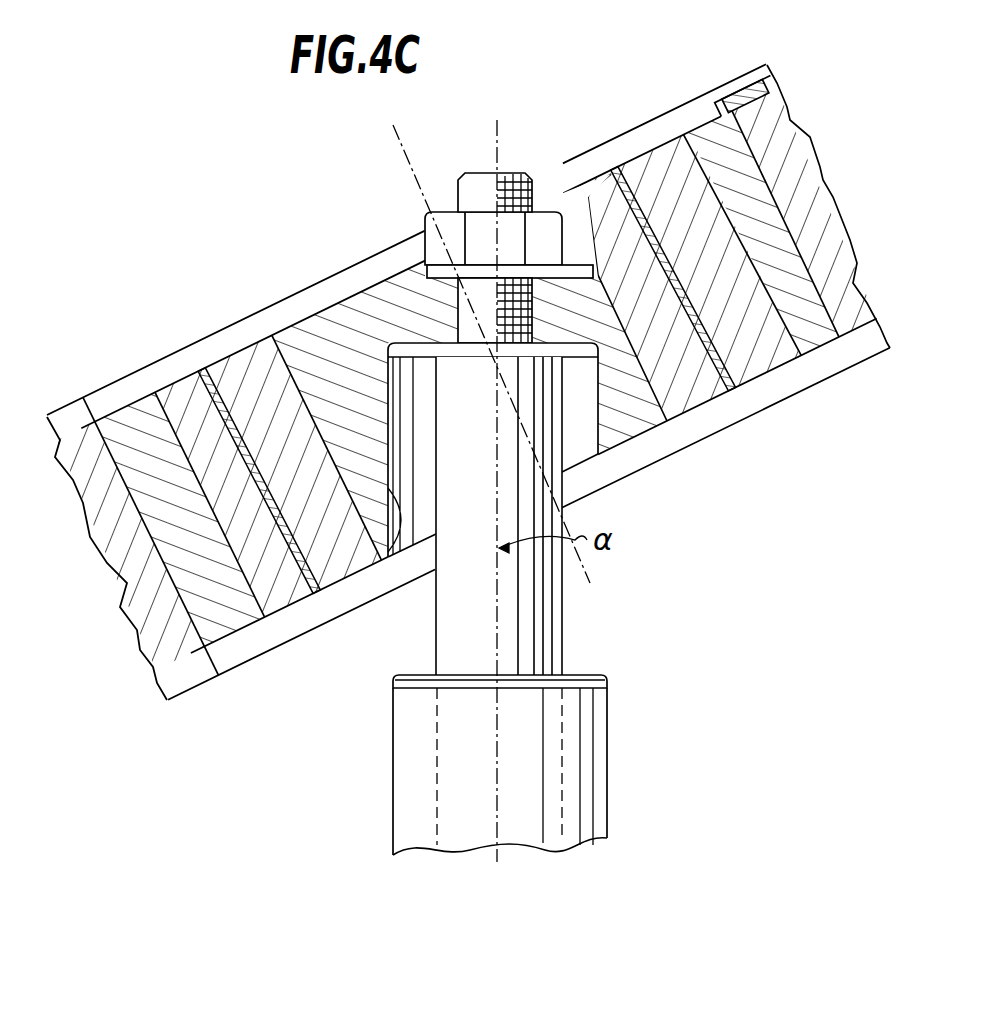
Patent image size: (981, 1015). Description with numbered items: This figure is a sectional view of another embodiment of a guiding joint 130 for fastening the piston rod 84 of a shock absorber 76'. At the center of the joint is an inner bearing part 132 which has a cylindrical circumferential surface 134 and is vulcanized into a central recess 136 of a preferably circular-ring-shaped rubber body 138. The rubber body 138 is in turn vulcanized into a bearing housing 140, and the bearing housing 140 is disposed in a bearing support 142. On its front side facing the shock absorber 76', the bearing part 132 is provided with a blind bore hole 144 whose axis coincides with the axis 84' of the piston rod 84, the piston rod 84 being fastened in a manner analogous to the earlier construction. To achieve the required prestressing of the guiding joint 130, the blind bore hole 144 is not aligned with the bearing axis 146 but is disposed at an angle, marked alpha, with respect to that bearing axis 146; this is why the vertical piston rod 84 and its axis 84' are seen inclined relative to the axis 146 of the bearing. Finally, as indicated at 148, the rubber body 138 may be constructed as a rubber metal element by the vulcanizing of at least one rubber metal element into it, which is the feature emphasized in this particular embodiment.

The guiding joint 130 is at (591, 104).
The inner bearing part 132 is at (328, 352).
The cylindrical circumferential surface 134 is at (282, 376).
The central recess 136 is at (583, 250).
The rubber body 138 is at (193, 390).
The bearing housing 140 is at (130, 410).
The bearing support 142 is at (166, 676).
The blind bore hole 144 is at (400, 530).
The bearing axis 146 is at (402, 147).
The rubber metal element 148 is at (652, 213).
The piston rod 84 is at (508, 424).
The axis of the piston rod 84' is at (476, 515).
The shock absorber 76' is at (541, 765).